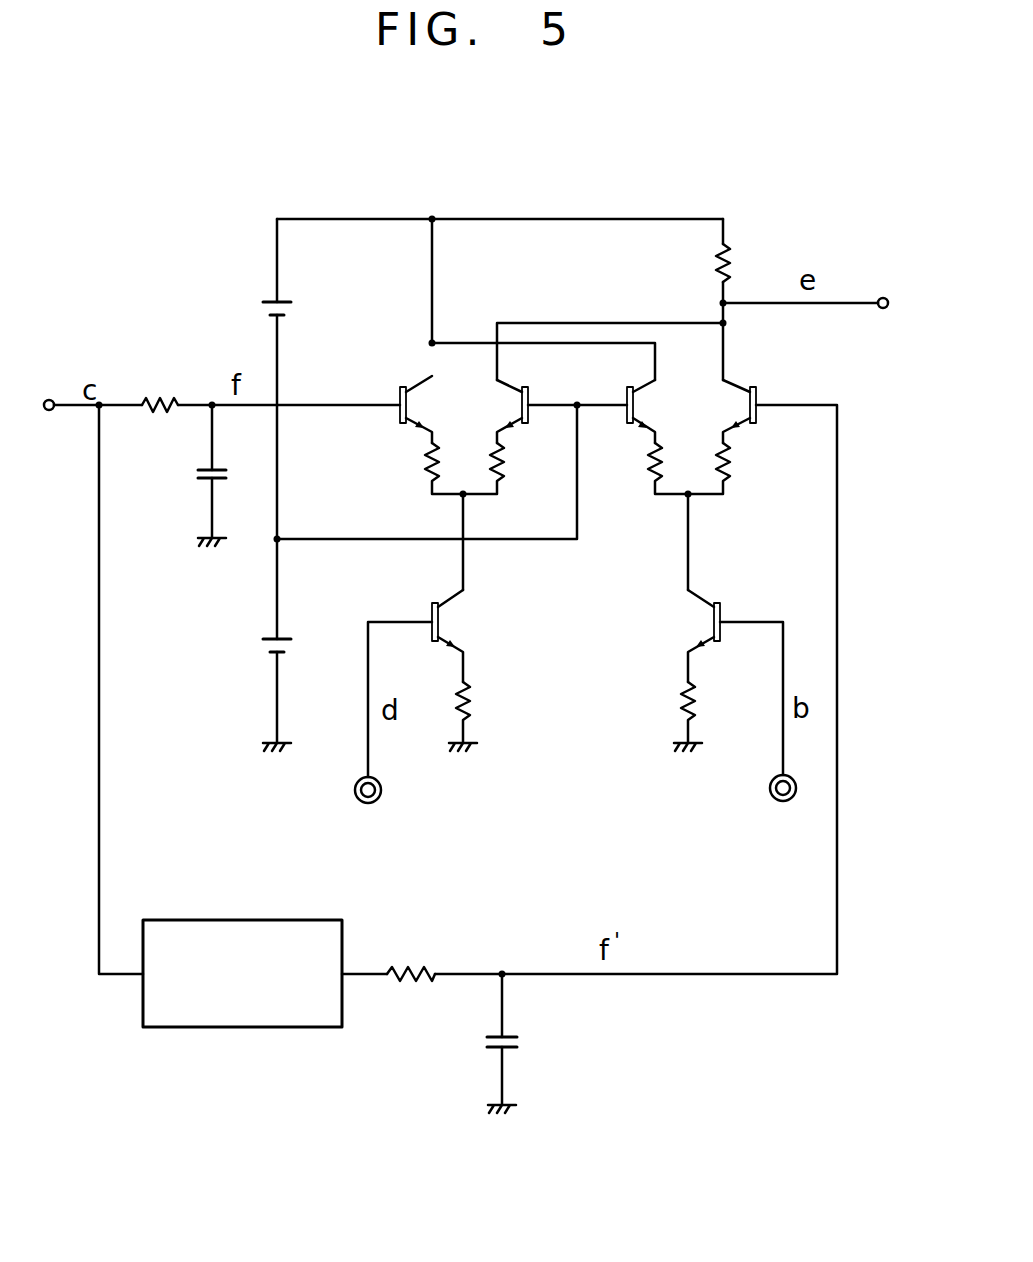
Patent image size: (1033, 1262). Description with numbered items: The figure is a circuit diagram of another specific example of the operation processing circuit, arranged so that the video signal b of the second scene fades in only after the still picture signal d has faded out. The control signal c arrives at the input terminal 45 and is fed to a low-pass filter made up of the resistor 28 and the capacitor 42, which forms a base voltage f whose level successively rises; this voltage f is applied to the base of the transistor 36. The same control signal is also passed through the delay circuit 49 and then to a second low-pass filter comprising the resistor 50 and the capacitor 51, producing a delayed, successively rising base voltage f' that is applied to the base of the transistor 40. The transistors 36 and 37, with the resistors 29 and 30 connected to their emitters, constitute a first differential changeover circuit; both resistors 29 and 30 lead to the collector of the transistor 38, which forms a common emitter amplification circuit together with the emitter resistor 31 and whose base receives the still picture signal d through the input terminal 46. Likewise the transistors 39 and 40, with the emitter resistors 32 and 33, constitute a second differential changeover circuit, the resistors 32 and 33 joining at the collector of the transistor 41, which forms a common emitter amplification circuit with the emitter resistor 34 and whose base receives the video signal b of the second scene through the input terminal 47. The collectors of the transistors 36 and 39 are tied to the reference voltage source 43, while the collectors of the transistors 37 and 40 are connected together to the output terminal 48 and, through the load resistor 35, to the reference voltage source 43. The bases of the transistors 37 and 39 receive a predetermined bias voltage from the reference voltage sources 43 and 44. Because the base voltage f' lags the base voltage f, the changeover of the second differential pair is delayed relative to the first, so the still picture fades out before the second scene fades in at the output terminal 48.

The resistor 28 is at (161, 398).
The resistor 29 is at (426, 476).
The resistor 30 is at (503, 473).
The emitter resistor 31 is at (458, 705).
The resistor 32 is at (648, 462).
The resistor 33 is at (730, 470).
The emitter resistor 34 is at (688, 701).
The load resistor 35 is at (728, 260).
The transistor 36 is at (400, 390).
The transistor 37 is at (520, 406).
The transistor 38 is at (448, 622).
The transistor 39 is at (638, 408).
The transistor 40 is at (766, 362).
The transistor 41 is at (710, 622).
The capacitor 42 is at (205, 478).
The reference voltage source 43 is at (268, 306).
The reference voltage source 44 is at (265, 642).
The input terminal 45 is at (52, 399).
The input terminal 46 is at (375, 804).
The input terminal 47 is at (775, 799).
The output terminal 48 is at (882, 298).
The delay circuit 49 is at (237, 1028).
The resistor 50 is at (406, 965).
The capacitor 51 is at (517, 1043).